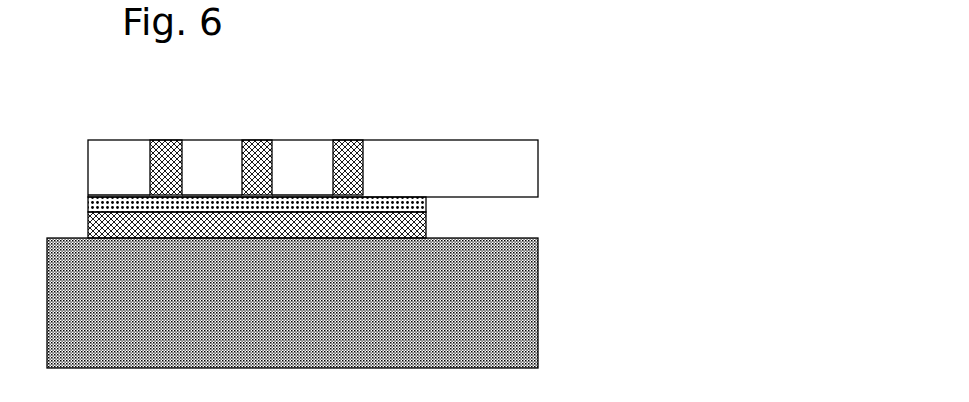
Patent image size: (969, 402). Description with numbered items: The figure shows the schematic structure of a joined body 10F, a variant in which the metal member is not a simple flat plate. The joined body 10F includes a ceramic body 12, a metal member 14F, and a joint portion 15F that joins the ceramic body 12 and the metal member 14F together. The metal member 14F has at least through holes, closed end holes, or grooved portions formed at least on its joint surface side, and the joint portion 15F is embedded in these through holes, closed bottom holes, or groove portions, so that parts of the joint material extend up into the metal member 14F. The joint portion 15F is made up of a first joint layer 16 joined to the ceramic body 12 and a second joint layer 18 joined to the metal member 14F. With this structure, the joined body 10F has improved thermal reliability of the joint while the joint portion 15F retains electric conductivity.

The joined body 10F is at (647, 103).
The ceramic body 12 is at (538, 293).
The metal member 14F is at (538, 150).
The joint portion 15F is at (408, 207).
The first joint layer 16 is at (426, 228).
The second joint layer 18 is at (364, 173).